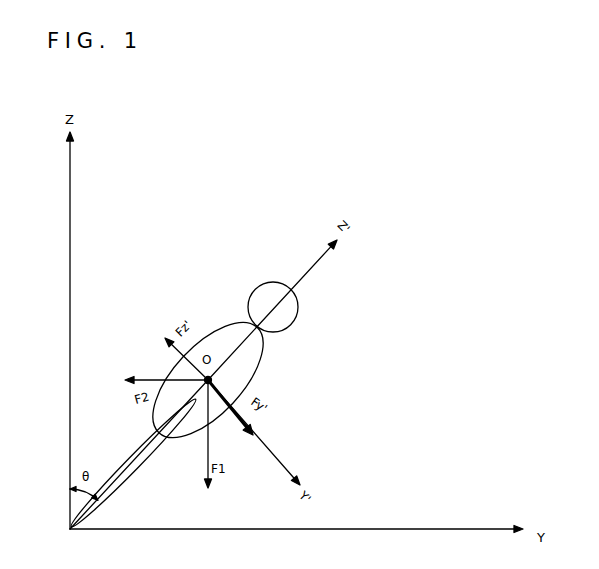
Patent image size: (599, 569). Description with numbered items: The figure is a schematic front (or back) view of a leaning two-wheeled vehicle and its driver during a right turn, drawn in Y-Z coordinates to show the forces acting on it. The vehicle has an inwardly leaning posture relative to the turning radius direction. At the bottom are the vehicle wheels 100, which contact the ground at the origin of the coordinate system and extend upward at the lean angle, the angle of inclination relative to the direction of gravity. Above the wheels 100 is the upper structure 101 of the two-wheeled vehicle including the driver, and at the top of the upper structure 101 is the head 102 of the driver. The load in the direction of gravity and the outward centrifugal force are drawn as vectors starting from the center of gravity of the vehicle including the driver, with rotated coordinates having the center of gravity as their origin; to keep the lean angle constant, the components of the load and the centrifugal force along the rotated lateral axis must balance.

The vehicle wheels 100 is at (128, 488).
The upper structure of the two-wheeled vehicle 101 is at (247, 381).
The head of the driver 102 is at (299, 300).